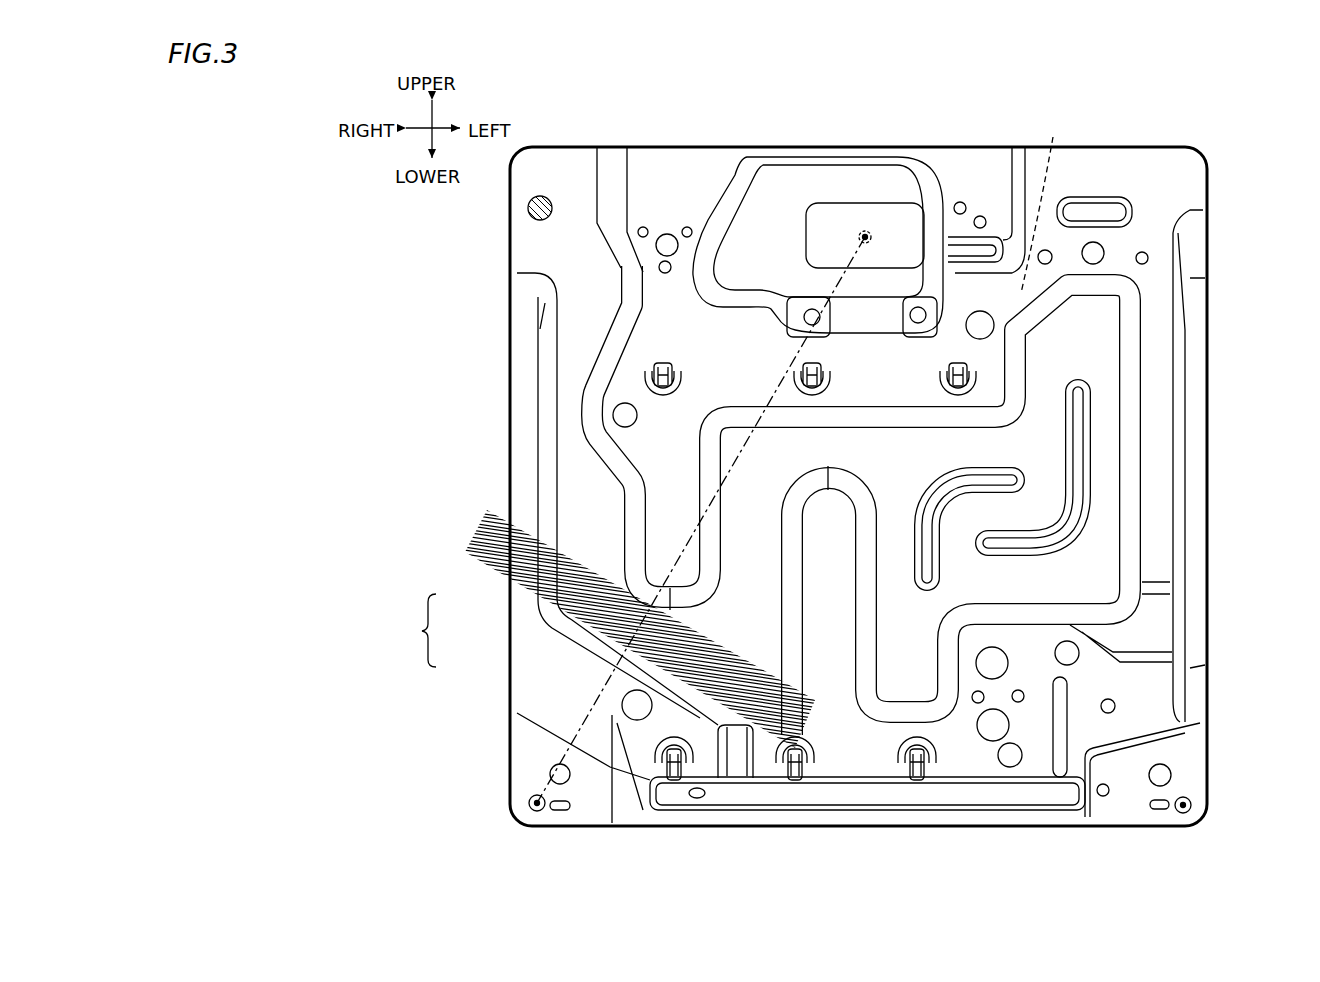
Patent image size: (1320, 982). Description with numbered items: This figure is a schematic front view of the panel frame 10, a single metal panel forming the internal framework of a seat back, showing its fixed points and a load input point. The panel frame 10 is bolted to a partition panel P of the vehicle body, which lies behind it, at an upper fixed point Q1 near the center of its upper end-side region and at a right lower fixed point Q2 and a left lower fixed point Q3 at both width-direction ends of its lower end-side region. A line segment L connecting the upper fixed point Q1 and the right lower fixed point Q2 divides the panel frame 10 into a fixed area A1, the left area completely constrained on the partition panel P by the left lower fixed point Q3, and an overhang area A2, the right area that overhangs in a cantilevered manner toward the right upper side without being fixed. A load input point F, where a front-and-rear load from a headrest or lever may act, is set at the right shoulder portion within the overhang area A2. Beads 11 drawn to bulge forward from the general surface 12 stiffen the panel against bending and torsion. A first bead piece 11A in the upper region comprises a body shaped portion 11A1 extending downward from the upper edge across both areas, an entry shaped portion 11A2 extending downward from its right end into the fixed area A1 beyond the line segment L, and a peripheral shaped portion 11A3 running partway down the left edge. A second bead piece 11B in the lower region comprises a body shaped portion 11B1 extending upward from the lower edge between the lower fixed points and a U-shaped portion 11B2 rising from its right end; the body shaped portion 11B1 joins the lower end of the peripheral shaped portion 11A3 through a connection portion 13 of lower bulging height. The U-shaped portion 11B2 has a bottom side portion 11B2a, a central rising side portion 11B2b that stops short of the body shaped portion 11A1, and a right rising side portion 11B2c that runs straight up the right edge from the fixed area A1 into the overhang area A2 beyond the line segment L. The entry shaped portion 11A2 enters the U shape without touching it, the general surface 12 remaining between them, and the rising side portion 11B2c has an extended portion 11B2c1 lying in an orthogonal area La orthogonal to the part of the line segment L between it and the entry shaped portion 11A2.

The panel frame 10 is at (606, 146).
The beads 11 is at (721, 355).
The first bead piece 11A is at (818, 214).
The body shaped portion 11A1 is at (742, 340).
The entry shaped portion 11A2 is at (665, 523).
The peripheral shaped portion 11A3 is at (1156, 519).
The second bead piece 11B is at (838, 750).
The body shaped portion 11B1 is at (880, 742).
The U-shaped portion 11B2 is at (403, 630).
The bottom side portion 11B2a is at (705, 735).
The rising side portion 11B2b is at (822, 640).
The rising side portion 11B2c is at (562, 604).
The extended portion 11B2c1 is at (500, 537).
The general surface 12 is at (859, 460).
The connection portion 13 is at (1148, 628).
The load input point F is at (527, 207).
The line segment L is at (735, 448).
The orthogonal area La is at (490, 563).
The partition panel P is at (1039, 204).
The upper fixed point Q1 is at (863, 230).
The right lower fixed point Q2 is at (537, 811).
The left lower fixed point Q3 is at (1183, 813).
The fixed area A1 is at (897, 601).
The overhang area A2 is at (612, 360).